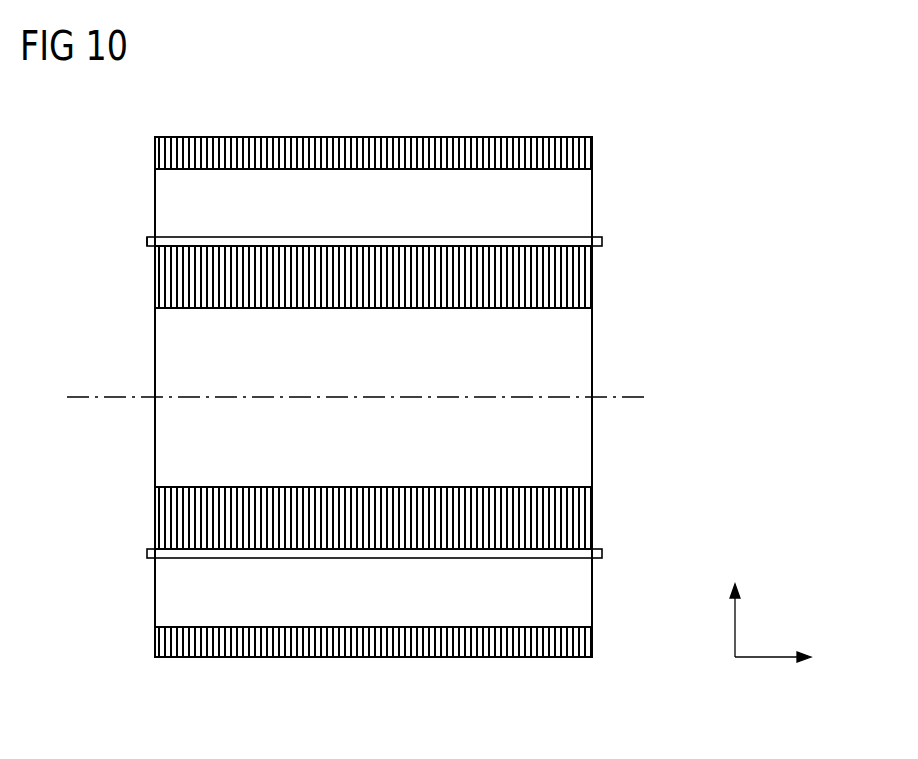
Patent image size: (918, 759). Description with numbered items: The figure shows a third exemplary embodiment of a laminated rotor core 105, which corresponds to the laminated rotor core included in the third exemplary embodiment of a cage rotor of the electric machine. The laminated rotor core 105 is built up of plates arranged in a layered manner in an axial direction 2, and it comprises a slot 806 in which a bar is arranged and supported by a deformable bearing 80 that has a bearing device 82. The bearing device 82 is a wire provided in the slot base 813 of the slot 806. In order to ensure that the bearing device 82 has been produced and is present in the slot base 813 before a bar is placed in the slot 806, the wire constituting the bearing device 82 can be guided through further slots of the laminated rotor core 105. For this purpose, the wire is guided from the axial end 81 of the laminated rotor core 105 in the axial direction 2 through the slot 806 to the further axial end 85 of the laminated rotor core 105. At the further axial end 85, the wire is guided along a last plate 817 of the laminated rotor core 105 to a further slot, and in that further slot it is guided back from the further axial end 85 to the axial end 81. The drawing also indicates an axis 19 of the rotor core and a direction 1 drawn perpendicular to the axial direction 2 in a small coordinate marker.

The laminated rotor core 105 is at (460, 115).
The further axial end 85 is at (587, 132).
The axial end 81 is at (155, 132).
The slot 806 is at (380, 162).
The bearing device 82 is at (173, 237).
The last plate 817 is at (588, 277).
The slot base 813 is at (300, 248).
The deformable bearing 80 is at (135, 238).
The rotation axis 19 is at (80, 397).
The axial direction 1 is at (735, 630).
The axial direction 2 is at (760, 657).